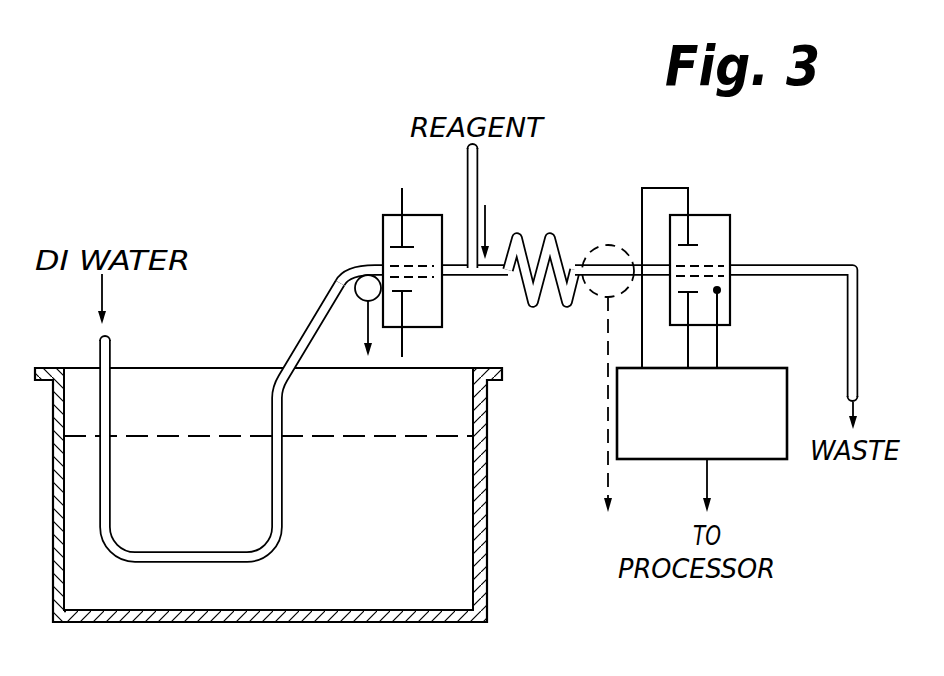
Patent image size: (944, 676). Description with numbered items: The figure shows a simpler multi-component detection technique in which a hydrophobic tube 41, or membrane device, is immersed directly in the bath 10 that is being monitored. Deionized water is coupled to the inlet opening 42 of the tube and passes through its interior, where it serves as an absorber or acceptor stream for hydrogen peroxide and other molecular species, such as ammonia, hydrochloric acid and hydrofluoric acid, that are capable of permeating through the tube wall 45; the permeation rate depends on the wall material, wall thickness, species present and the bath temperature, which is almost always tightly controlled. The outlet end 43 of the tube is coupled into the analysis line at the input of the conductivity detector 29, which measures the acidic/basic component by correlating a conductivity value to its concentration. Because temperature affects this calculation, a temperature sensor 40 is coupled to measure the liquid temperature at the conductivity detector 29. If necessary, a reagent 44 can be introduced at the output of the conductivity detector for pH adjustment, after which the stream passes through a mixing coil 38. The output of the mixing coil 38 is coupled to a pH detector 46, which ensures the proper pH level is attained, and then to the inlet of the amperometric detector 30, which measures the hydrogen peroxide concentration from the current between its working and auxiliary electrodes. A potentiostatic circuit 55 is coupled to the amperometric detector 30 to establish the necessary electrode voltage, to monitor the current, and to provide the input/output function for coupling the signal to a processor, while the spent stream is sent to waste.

The bath 10 is at (218, 435).
The conductivity detector 29 is at (443, 316).
The amperometric detector 30 is at (730, 231).
The mixing coil 38 is at (548, 238).
The temperature sensor 40 is at (357, 299).
The hydrophobic tube 41 is at (283, 550).
The inlet opening 42 is at (108, 338).
The outlet end 43 is at (383, 264).
The reagent 44 is at (478, 158).
The tube wall 45 is at (176, 565).
The pH detector 46 is at (590, 246).
The potentiostatic circuit 55 is at (617, 415).